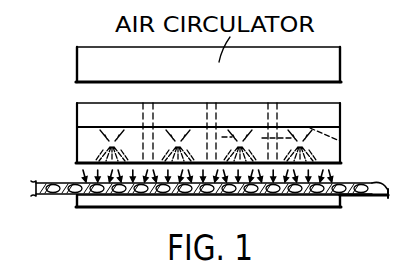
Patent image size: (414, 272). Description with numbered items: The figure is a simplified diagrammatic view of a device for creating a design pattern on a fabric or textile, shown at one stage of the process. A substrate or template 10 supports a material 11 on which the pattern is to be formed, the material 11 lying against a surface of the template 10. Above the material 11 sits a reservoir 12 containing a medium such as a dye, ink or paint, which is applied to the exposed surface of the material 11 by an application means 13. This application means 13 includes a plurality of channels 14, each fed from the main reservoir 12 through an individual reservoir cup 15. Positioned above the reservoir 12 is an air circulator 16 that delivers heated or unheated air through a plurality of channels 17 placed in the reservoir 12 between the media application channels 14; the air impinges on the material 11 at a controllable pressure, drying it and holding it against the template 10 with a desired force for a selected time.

The template 10 is at (341, 201).
The material 11 is at (374, 182).
The reservoir 12 is at (330, 115).
The application means 13 is at (204, 118).
The channels 14 is at (103, 157).
The reservoir cups 15 is at (342, 143).
The air circulator 16 is at (330, 63).
The channels 17 is at (143, 108).